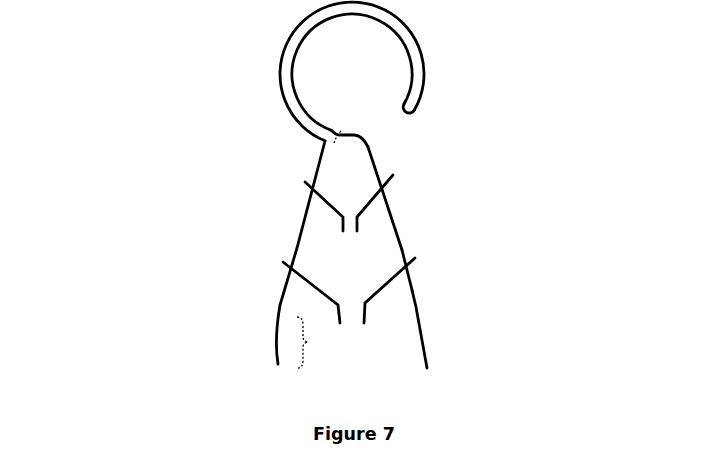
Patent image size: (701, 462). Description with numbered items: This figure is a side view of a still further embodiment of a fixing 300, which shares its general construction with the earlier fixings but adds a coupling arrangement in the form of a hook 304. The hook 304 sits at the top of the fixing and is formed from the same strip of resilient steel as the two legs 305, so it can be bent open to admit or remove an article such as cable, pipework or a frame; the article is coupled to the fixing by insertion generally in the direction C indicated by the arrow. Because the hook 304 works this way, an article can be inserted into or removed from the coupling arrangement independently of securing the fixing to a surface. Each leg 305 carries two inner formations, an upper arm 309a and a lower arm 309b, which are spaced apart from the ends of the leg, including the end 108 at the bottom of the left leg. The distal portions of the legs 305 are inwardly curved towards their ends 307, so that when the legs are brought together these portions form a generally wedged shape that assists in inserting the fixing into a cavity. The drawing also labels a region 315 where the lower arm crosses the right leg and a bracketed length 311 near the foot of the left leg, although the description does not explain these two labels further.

The fixing 300 is at (134, 91).
The hook 304 is at (425, 55).
The distal end of leg 307 is at (370, 127).
The insertion direction C is at (386, 122).
The distal end of leg 108 is at (277, 364).
The legs 305 is at (420, 300).
The attachment point 315 is at (415, 267).
The arm 309a is at (332, 210).
The arm 309b is at (313, 292).
The leg end portion 311 is at (325, 342).